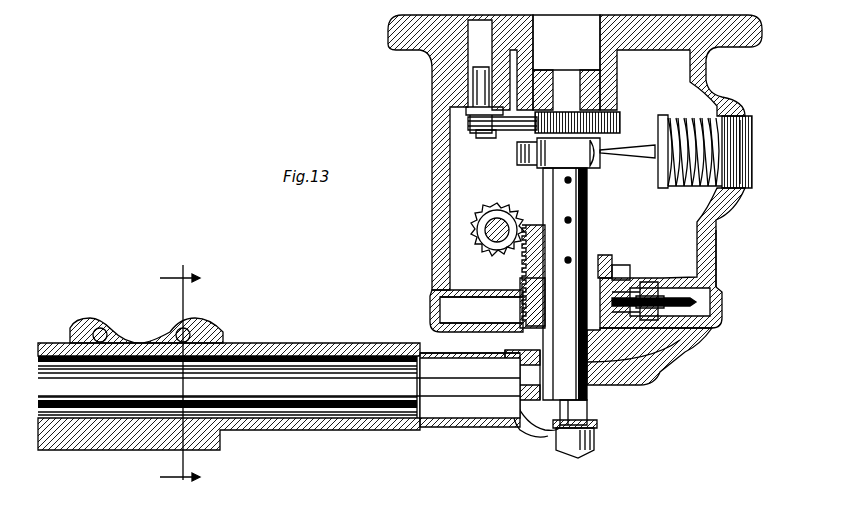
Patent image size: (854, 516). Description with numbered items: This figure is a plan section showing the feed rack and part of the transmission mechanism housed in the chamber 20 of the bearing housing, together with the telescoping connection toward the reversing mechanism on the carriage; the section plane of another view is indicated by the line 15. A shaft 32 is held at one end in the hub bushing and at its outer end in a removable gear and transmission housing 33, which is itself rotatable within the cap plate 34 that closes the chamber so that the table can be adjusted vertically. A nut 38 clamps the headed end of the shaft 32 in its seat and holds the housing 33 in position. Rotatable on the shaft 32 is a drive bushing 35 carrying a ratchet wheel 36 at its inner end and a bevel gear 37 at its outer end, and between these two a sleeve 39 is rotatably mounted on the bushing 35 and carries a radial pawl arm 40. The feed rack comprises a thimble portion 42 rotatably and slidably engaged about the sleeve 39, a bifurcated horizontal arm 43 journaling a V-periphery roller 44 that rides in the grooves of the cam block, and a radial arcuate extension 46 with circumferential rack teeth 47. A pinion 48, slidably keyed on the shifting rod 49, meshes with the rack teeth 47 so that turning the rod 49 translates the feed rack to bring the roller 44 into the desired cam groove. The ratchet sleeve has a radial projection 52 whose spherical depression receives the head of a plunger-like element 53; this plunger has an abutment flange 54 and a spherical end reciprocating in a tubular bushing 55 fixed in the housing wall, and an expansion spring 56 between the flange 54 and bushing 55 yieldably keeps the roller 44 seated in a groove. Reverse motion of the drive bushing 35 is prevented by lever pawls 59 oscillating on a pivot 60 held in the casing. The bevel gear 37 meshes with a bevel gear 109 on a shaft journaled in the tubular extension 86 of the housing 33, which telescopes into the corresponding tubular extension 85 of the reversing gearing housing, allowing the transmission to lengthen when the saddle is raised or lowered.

The section line 15 is at (180, 373).
The chamber 20 is at (450, 203).
The shaft 32 is at (590, 378).
The gear and transmission housing 33 is at (652, 378).
The cap plate 34 is at (721, 287).
The drive bushing 35 is at (610, 256).
The ratchet wheel 36 is at (618, 116).
The bevel gear 37 is at (543, 362).
The nut 38 is at (600, 441).
The sleeve 39 is at (600, 226).
The pawl arm 40 is at (532, 128).
The thimble portion 42 is at (616, 272).
The horizontal arm 43 is at (660, 284).
The roller 44 is at (700, 302).
The radial arcuate extension 46 is at (521, 302).
The rack teeth 47 is at (519, 266).
The pinion 48 is at (513, 208).
The shifting rod 49 is at (495, 228).
The radial projection 52 is at (598, 165).
The plunger-like element 53 is at (631, 156).
The abutment flange 54 is at (662, 114).
The tubular bushing 55 is at (745, 146).
The expansion spring 56 is at (690, 186).
The lever pawls 59 is at (490, 140).
The pivot 60 is at (486, 66).
The tubular extension 85 is at (88, 450).
The tubular extension 86 is at (294, 430).
The bevel gear 109 is at (512, 430).